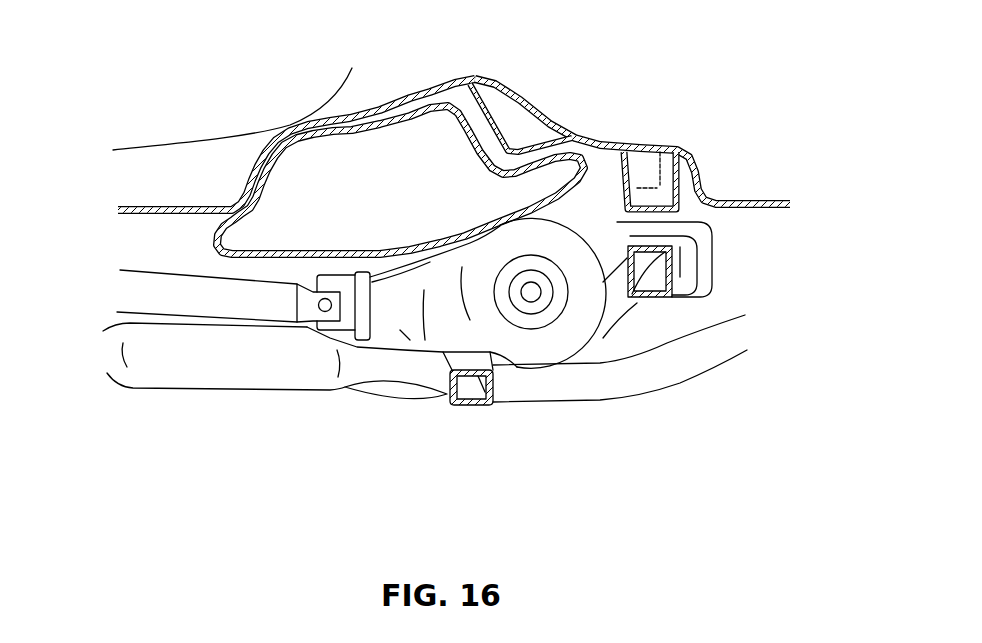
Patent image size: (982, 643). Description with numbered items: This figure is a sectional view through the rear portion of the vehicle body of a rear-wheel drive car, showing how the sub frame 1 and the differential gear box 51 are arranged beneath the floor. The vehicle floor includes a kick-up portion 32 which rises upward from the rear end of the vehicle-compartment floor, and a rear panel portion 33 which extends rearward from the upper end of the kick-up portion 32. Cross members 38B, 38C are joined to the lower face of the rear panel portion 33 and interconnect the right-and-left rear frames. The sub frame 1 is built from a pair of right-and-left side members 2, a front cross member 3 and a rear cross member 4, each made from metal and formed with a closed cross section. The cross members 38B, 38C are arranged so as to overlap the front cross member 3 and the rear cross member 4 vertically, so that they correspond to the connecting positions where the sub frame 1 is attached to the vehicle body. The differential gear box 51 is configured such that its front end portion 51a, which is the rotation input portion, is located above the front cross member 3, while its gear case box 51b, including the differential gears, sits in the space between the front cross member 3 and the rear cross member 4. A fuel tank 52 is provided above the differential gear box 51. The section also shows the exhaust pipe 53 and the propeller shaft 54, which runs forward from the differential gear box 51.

The sub frame 1 is at (473, 427).
The front cross member 3 is at (470, 407).
The side member 2 is at (603, 343).
The rear cross member 4 is at (645, 297).
The kick-up portion 32 is at (253, 163).
The rear panel portion 33 is at (593, 143).
The cross member 38B is at (497, 117).
The cross member 38C is at (630, 170).
The differential gear box 51 is at (476, 353).
The front end portion 51a is at (410, 327).
The gear case box 51b is at (533, 343).
The fuel tank 52 is at (410, 117).
The exhaust pipe 53 is at (712, 357).
The propeller shaft 54 is at (208, 303).